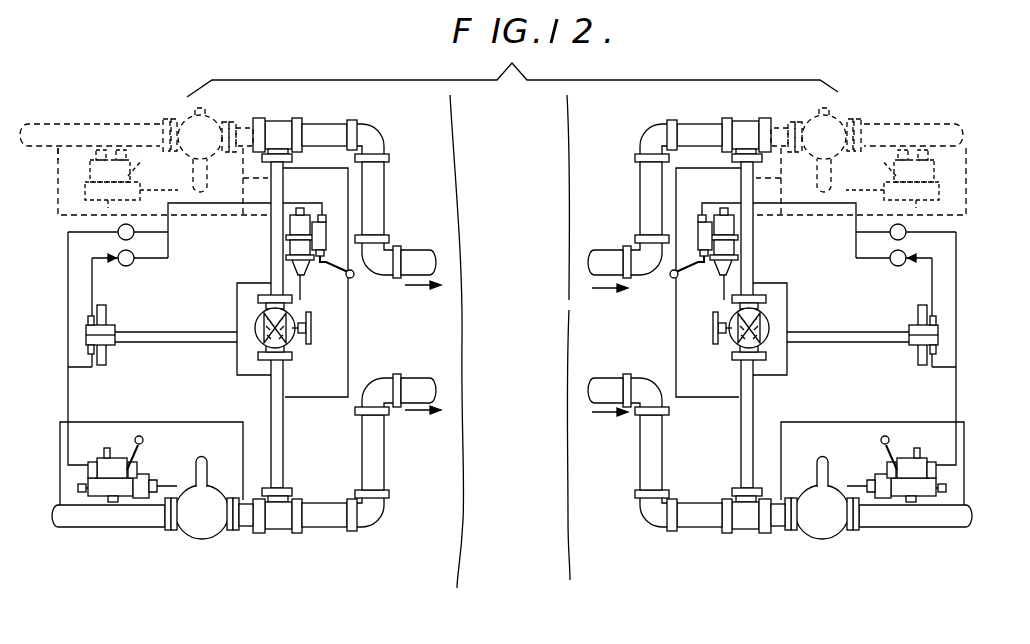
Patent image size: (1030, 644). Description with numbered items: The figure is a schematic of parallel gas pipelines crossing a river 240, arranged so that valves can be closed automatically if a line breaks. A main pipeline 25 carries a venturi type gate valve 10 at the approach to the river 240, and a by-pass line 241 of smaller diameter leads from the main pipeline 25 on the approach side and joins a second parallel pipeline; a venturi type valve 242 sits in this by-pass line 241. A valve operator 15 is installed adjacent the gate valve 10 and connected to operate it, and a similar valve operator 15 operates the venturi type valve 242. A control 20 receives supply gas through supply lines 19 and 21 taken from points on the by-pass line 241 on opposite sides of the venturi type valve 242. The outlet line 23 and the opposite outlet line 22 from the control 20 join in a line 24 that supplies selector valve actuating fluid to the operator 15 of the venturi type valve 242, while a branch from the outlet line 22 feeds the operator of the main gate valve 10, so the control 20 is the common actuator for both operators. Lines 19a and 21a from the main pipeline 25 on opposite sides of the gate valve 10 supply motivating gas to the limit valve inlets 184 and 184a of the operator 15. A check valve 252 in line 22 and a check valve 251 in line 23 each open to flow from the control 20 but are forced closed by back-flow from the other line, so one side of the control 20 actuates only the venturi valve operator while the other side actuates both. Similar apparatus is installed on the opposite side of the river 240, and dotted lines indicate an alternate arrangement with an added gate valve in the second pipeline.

The venturi type gate valve 10 is at (201, 115).
The valve operator 15 is at (150, 178).
The supply line 19 is at (202, 330).
The line 19a is at (57, 165).
The control 20 is at (116, 322).
The supply line 21 is at (198, 342).
The line 21a is at (338, 170).
The outlet line 22 is at (68, 297).
The outlet line 23 is at (96, 288).
The line 24 is at (800, 216).
The main pipeline 25 is at (118, 124).
The limit valve inlet 184 is at (70, 212).
The limit valve inlet 184a is at (890, 448).
The river 240 is at (525, 429).
The by-pass line 241 is at (285, 457).
The venturi type valve 242 is at (291, 352).
The check valve 251 is at (152, 265).
The check valve 252 is at (168, 244).